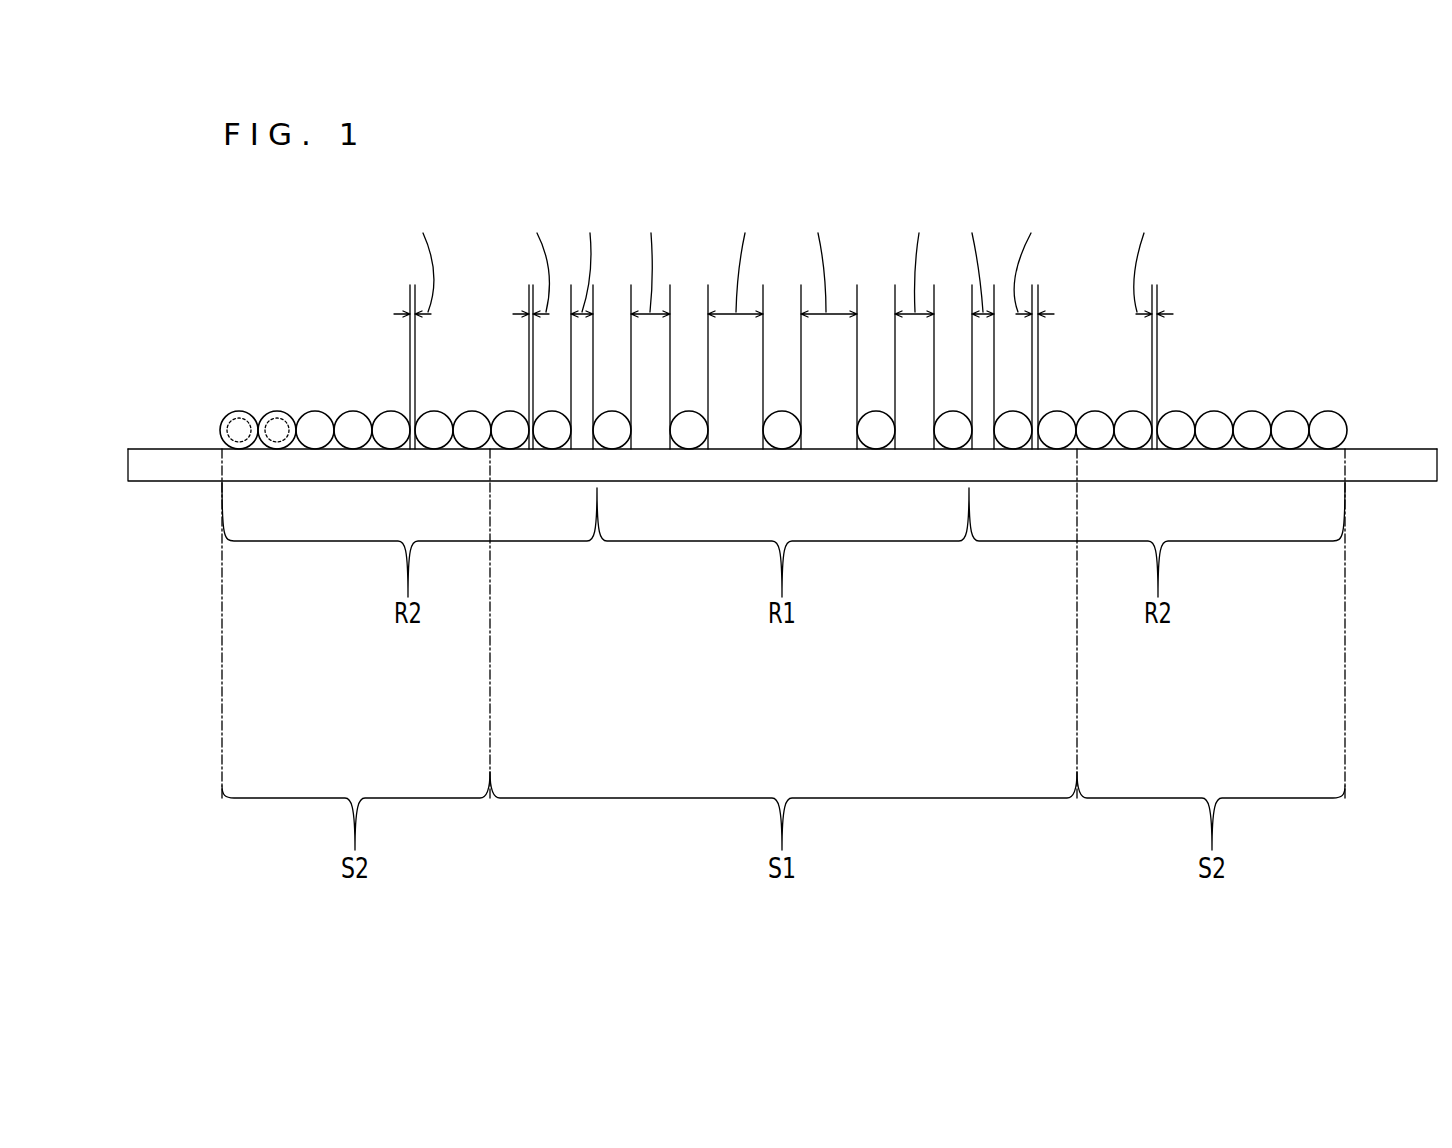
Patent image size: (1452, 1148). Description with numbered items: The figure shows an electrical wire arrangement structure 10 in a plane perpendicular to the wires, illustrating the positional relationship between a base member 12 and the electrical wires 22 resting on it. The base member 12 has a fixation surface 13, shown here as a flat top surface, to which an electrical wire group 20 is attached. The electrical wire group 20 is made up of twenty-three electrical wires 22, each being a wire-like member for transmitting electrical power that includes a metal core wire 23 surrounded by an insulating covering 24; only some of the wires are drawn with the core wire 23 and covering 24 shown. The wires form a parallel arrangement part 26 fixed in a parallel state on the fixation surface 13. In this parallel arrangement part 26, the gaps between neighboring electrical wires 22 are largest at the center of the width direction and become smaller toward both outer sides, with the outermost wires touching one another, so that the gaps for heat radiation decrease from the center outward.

The electrical wire arrangement structure 10 is at (1326, 378).
The base member 12 is at (1397, 492).
The fixation surface 13 is at (1398, 450).
The electrical wire group 20 is at (1363, 405).
The electrical wire 22 is at (220, 426).
The core wire 23 is at (238, 409).
The covering 24 is at (230, 421).
The parallel arrangement part 26 is at (1242, 380).